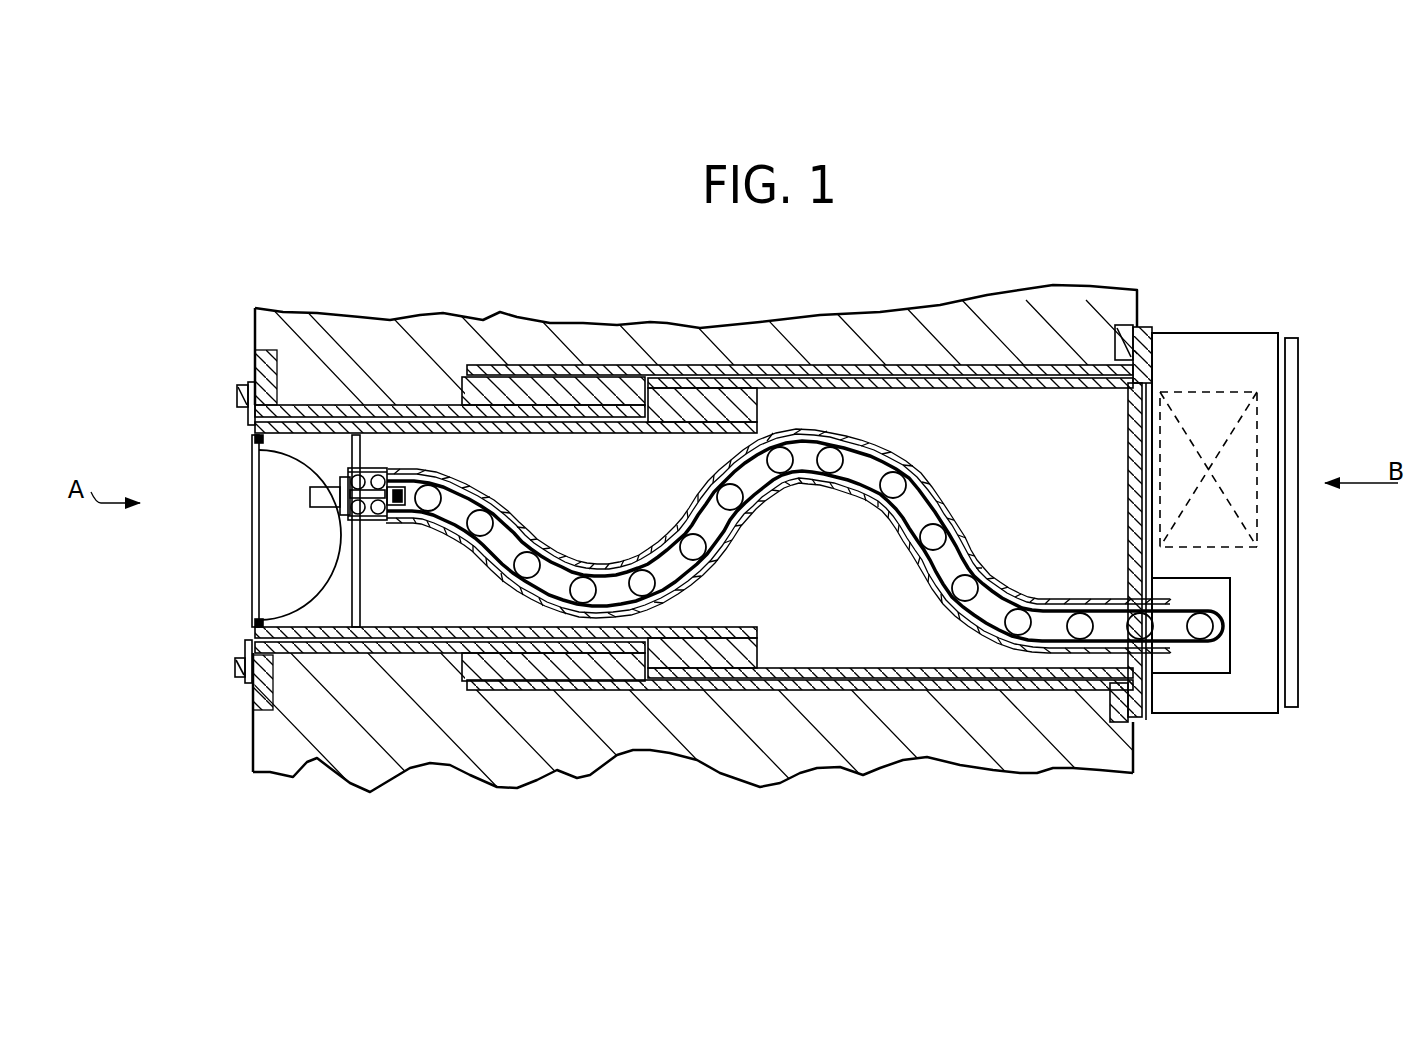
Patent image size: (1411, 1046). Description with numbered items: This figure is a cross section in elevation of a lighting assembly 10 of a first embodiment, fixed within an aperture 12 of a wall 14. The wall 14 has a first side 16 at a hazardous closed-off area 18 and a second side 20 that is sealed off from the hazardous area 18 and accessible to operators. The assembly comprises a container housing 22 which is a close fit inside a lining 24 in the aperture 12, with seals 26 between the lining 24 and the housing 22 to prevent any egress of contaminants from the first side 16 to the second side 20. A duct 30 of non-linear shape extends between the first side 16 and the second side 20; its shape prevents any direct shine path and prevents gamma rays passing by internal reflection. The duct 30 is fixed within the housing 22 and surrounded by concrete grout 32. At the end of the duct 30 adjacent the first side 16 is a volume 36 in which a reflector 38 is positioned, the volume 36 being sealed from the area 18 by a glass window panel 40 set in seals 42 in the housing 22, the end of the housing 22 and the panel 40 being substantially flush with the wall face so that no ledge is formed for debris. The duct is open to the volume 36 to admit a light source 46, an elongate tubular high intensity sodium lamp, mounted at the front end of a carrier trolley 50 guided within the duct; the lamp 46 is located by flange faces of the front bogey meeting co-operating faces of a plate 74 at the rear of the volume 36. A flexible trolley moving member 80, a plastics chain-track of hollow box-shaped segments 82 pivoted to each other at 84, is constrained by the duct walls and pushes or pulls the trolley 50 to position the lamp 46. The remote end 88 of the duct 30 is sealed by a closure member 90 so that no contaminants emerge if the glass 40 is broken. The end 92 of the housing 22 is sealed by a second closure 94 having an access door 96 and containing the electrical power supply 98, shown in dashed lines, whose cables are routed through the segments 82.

The lighting assembly 10 is at (1312, 383).
The aperture 12 is at (880, 400).
The wall 14 is at (658, 338).
The first side 16 is at (250, 728).
The hazardous closed-off area 18 is at (118, 565).
The second side 20 is at (1142, 763).
The container housing 22 is at (920, 683).
The lining 24 is at (985, 678).
The seals 26 is at (248, 420).
The duct 30 is at (952, 480).
The concrete grout 32 is at (575, 489).
The volume 36 is at (277, 547).
The reflector 38 is at (327, 457).
The glass window panel 40 is at (253, 521).
The seals 42 is at (250, 445).
The light source 46 is at (310, 497).
The carrier trolley 50 is at (363, 480).
The plate 74 is at (358, 592).
The flexible trolley moving member 80 is at (873, 449).
The segments 82 is at (810, 465).
The pivots 84 is at (893, 483).
The remote end 88 is at (1173, 603).
The closure member 90 is at (1230, 623).
The end of the housing 92 is at (1167, 317).
The second closure 94 is at (1250, 332).
The access door 96 is at (1292, 442).
The electrical power supply 98 is at (1253, 483).